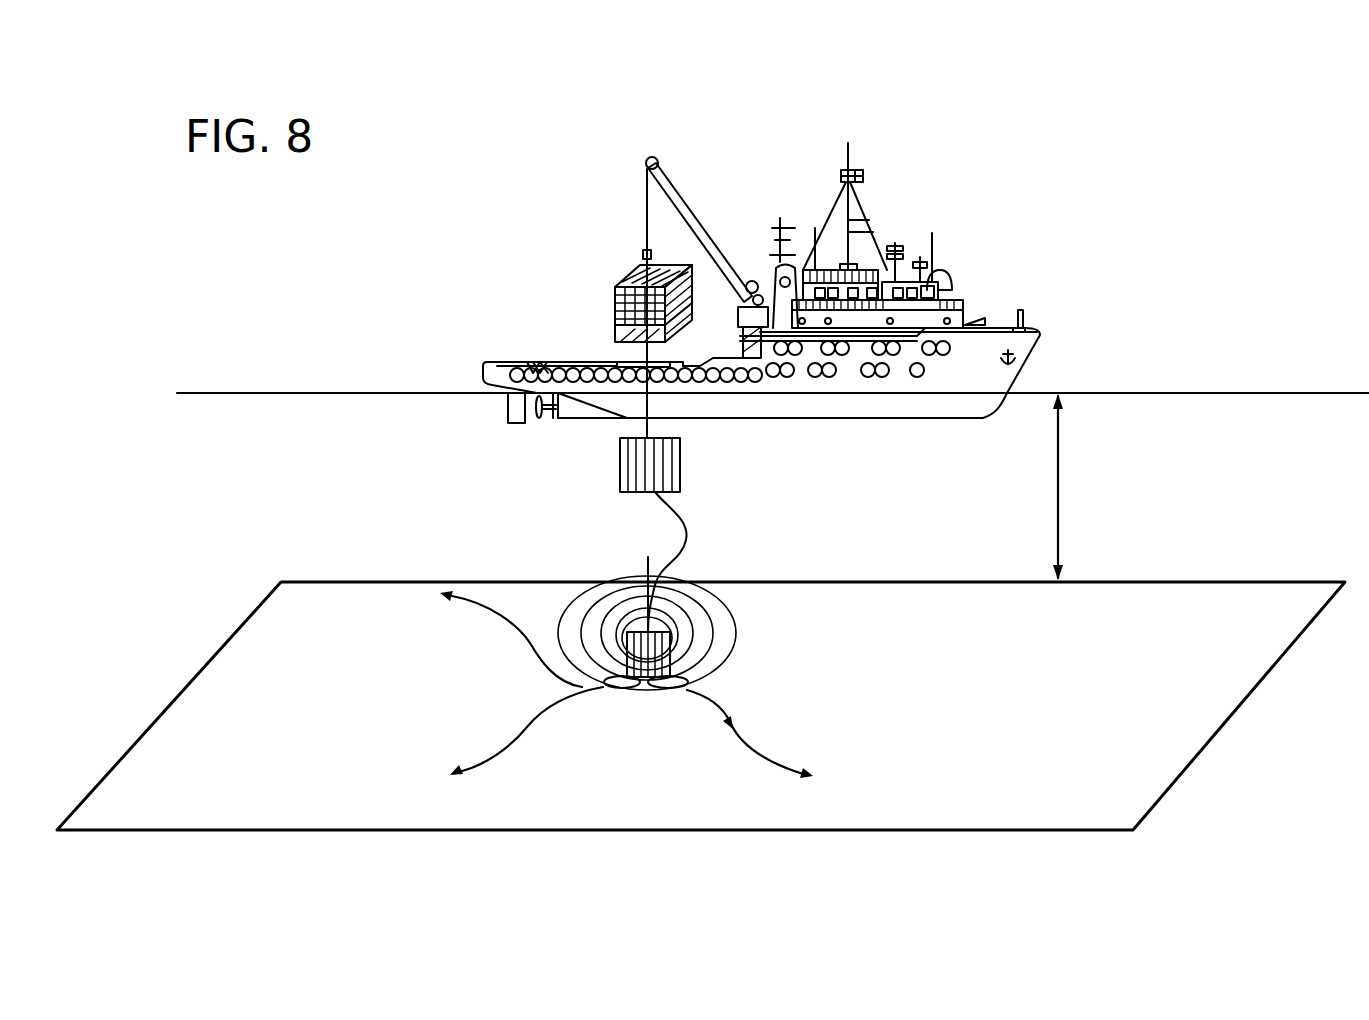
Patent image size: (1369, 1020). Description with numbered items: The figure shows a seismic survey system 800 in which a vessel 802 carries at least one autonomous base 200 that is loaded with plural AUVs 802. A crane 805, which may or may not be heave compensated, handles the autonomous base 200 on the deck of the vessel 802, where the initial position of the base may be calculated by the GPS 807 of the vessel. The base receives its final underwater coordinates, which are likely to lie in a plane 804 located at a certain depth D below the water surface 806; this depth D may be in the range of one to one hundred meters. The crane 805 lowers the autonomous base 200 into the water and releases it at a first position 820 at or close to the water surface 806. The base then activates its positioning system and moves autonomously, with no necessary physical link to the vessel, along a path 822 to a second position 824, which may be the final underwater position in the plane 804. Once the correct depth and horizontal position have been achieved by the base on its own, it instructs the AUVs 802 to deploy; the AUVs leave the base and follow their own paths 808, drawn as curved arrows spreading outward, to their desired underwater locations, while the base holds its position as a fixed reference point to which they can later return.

The seismic survey system 800 is at (573, 100).
The autonomous base 200 is at (563, 217).
The vessel 802 is at (614, 294).
The crane 805 is at (745, 188).
The GPS 807 is at (858, 172).
The water surface 806 is at (1142, 393).
The plane 804 is at (1105, 600).
The first position 820 is at (594, 475).
The path 822 is at (684, 528).
The second position 824 is at (668, 652).
The paths 808 is at (763, 760).
The depth D is at (1060, 474).